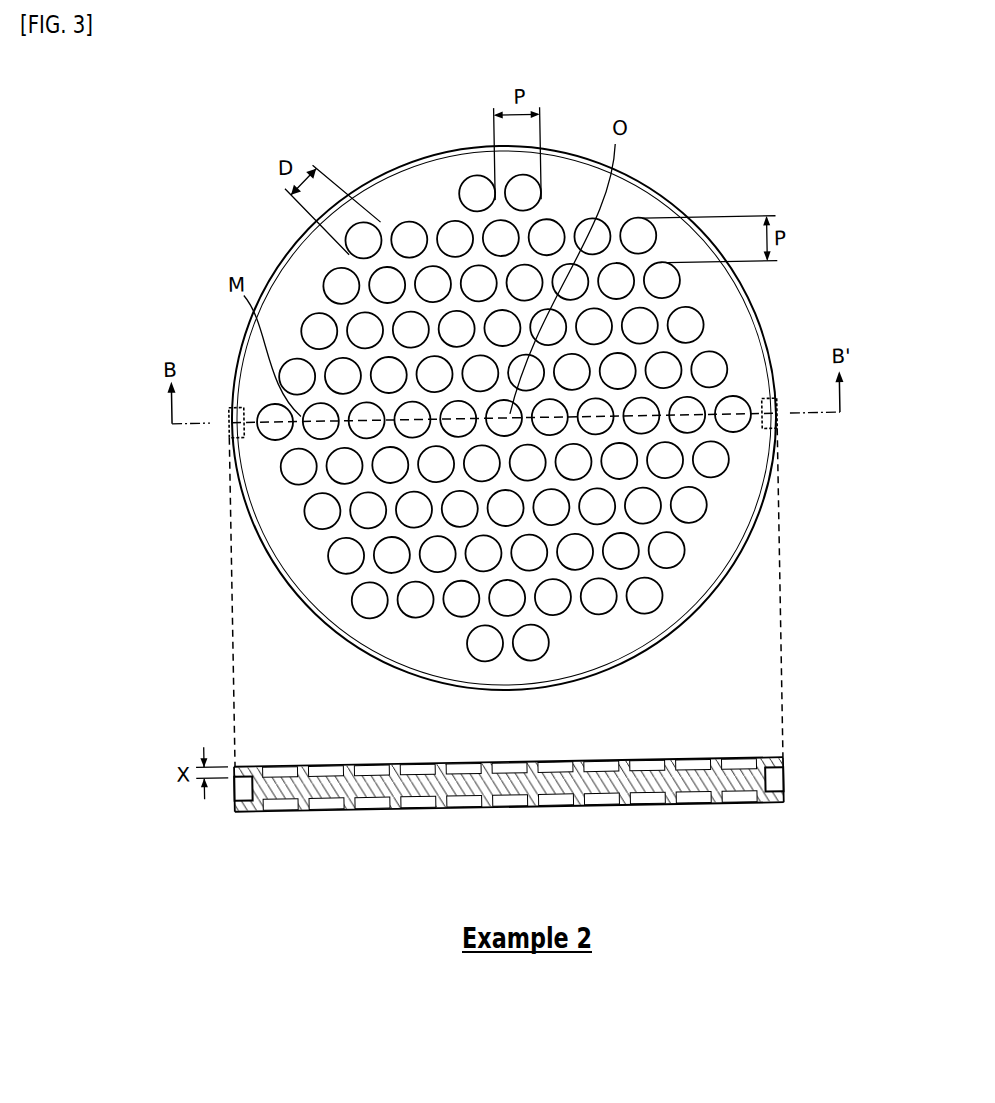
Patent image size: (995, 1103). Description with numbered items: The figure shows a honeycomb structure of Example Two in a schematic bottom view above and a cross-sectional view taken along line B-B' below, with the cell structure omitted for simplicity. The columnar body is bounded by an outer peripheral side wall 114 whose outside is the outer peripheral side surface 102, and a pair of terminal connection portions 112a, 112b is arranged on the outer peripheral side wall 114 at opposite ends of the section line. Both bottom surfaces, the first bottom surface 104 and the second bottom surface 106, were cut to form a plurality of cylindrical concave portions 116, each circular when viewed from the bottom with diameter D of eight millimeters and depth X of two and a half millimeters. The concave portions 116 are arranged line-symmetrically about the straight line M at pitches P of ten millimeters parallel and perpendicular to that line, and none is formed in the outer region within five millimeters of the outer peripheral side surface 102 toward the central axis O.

The outer peripheral side surface 102 is at (387, 176).
The outer peripheral side wall 114 is at (650, 190).
The concave portion 116 is at (697, 322).
The first bottom surface 104 is at (574, 762).
The second bottom surface 106 is at (476, 807).
The terminal connection portion 112a is at (228, 423).
The terminal connection portion 112b is at (777, 418).